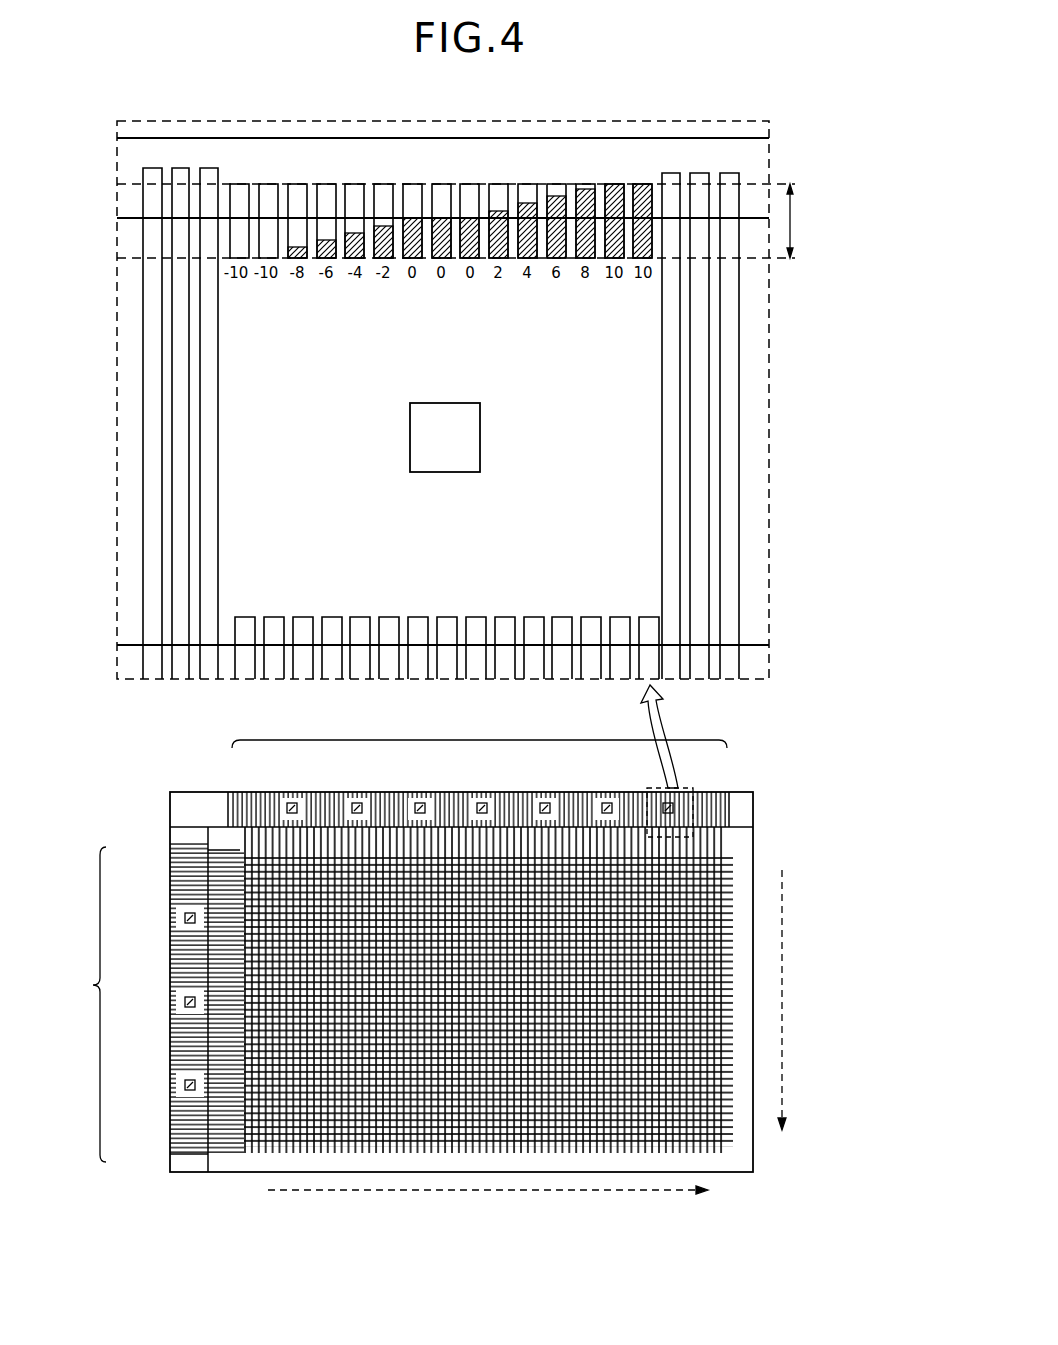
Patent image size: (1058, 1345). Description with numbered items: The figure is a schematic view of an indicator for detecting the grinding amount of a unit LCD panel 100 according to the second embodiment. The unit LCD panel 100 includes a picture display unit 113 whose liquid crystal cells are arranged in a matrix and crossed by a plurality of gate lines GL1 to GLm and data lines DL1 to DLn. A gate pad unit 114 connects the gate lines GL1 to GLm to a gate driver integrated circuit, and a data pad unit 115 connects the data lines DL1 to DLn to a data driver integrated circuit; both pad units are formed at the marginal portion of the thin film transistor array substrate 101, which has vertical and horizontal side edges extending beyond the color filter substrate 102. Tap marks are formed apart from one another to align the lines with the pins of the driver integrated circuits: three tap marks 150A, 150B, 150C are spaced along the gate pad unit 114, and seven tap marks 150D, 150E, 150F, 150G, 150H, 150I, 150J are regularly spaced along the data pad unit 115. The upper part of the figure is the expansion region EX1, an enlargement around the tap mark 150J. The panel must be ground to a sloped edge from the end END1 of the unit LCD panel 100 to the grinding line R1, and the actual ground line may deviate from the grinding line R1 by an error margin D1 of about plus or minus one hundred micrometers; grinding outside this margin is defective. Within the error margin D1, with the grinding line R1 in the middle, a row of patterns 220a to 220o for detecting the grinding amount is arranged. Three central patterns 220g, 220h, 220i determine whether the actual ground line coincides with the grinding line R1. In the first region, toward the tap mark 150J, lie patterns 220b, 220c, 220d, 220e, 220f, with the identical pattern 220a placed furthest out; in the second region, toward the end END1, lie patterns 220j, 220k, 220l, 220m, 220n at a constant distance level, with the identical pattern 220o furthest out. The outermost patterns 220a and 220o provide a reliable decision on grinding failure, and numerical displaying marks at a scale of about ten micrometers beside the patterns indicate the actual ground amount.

The unit LCD panel 100 is at (768, 1168).
The thin film transistor array substrate 101 is at (190, 806).
The color filter substrate 102 is at (226, 838).
The picture display unit 113 is at (452, 994).
The gate pad unit 114 is at (80, 1004).
The data pad unit 115 is at (479, 729).
The tap mark 150A is at (184, 918).
The tap mark 150B is at (184, 1002).
The tap mark 150C is at (184, 1085).
The tap mark 150D is at (292, 800).
The tap mark 150E is at (357, 800).
The tap mark 150F is at (420, 800).
The tap mark 150G is at (482, 800).
The tap mark 150H is at (545, 800).
The tap mark 150I is at (607, 800).
The tap mark 150J is at (457, 437).
The pattern for detecting a grinding amount 220a is at (236, 200).
The pattern for detecting a grinding amount 220b is at (265, 200).
The pattern for detecting a grinding amount 220c is at (294, 200).
The pattern for detecting a grinding amount 220d is at (323, 200).
The pattern for detecting a grinding amount 220e is at (352, 200).
The pattern for detecting a grinding amount 220f is at (381, 200).
The pattern for detecting a grinding amount 220g is at (410, 200).
The pattern for detecting a grinding amount 220h is at (439, 200).
The pattern for detecting a grinding amount 220i is at (467, 200).
The pattern for detecting a grinding amount 220j is at (496, 200).
The pattern for detecting a grinding amount 220k is at (525, 200).
The pattern for detecting a grinding amount 220l is at (554, 200).
The pattern for detecting a grinding amount 220m is at (583, 200).
The pattern for detecting a grinding amount 220n is at (612, 200).
The pattern for detecting a grinding amount 220o is at (641, 200).
The end of the unit LCD panel END1 is at (715, 138).
The grinding line R1 is at (124, 218).
The error margin D1 is at (838, 221).
The expansion region EX1 is at (777, 628).
The gate line GL1 is at (780, 988).
The gate line GLm is at (782, 1150).
The data line DL1 is at (467, 1190).
The data line DLn is at (729, 1190).